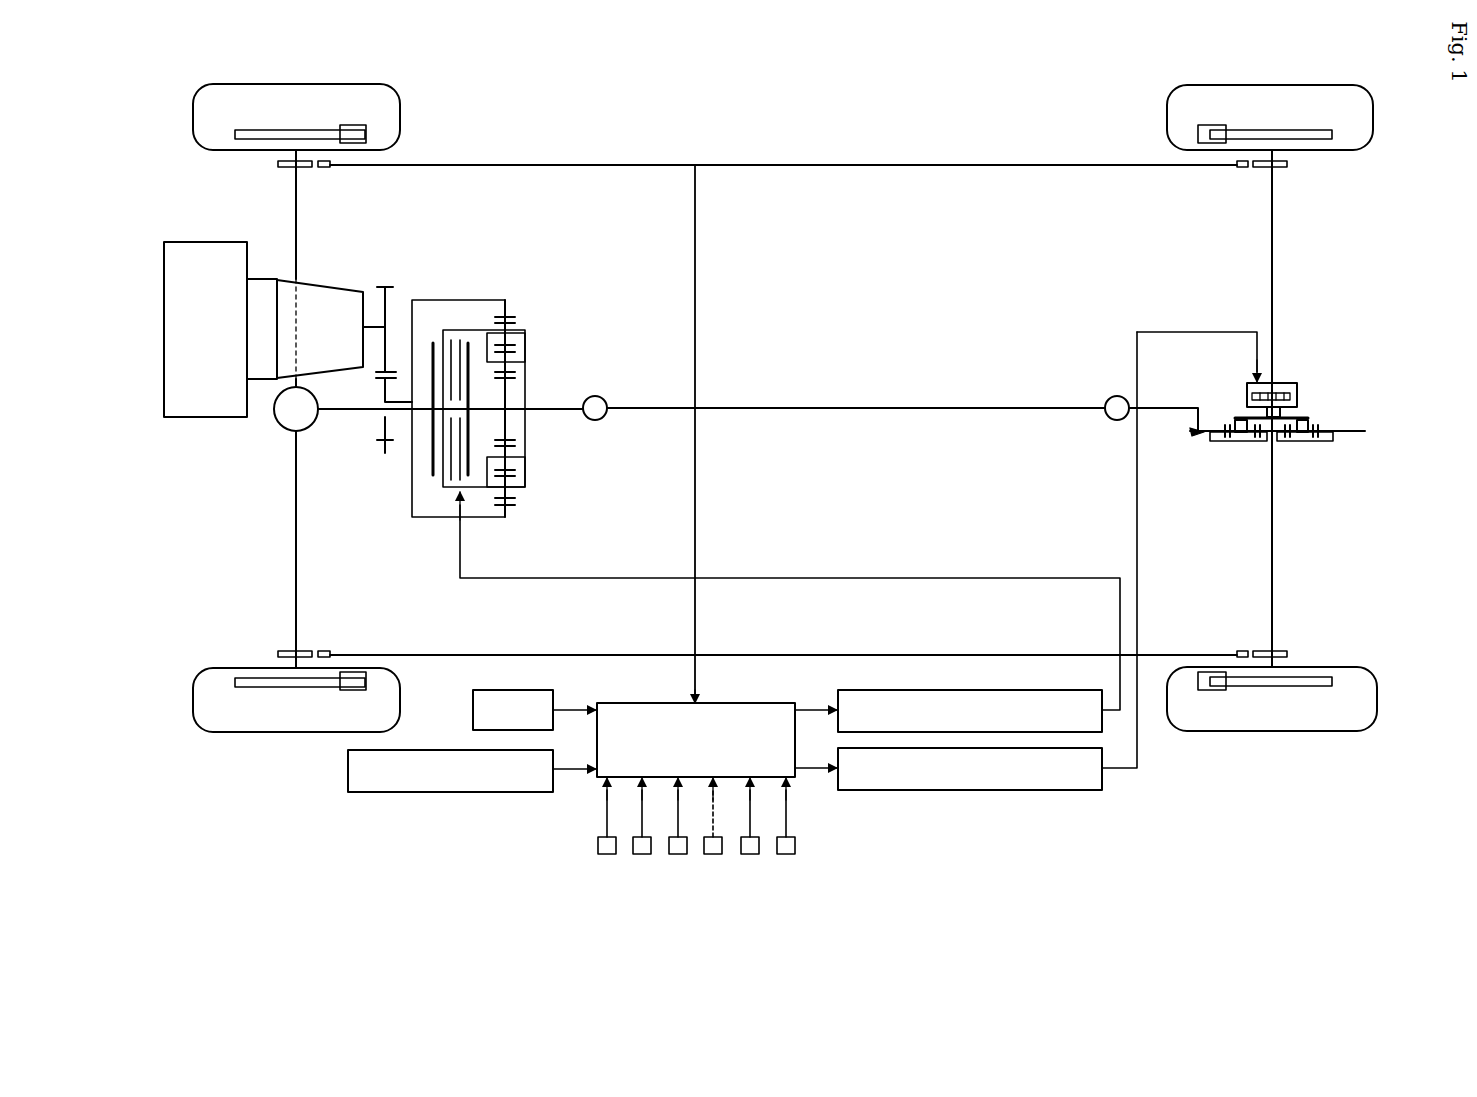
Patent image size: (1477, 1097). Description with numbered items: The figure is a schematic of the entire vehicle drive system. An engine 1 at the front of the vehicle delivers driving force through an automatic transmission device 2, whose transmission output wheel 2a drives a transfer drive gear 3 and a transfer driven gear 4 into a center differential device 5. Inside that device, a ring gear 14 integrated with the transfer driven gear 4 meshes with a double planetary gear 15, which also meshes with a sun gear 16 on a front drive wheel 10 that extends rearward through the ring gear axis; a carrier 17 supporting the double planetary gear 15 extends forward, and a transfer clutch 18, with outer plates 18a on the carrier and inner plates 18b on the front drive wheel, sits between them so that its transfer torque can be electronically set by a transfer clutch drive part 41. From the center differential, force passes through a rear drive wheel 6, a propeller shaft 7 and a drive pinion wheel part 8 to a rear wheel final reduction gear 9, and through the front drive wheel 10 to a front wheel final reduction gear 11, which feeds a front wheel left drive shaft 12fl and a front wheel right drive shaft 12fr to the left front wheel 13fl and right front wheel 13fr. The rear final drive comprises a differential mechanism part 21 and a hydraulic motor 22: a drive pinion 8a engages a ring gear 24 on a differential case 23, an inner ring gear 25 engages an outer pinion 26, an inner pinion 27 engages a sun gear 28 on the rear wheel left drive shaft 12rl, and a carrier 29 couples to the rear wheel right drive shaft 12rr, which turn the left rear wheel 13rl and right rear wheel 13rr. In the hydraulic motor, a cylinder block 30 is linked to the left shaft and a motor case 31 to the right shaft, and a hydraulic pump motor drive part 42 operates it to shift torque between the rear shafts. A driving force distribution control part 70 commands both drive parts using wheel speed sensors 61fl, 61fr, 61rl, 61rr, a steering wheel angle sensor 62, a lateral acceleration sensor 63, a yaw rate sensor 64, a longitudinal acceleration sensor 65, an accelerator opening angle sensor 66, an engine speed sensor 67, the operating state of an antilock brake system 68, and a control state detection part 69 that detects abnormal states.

The engine 1 is at (164, 316).
The automatic transmission device 2 is at (270, 278).
The transmission output wheel 2a is at (372, 326).
The transfer drive gear 3 is at (393, 287).
The transfer driven gear 4 is at (382, 454).
The center differential device 5 is at (524, 364).
The rear drive wheel 6 is at (584, 404).
The propeller shaft 7 is at (934, 403).
The drive pinion wheel part 8 is at (1161, 405).
The drive pinion 8a is at (1205, 408).
The rear wheel final reduction gear 9 is at (1288, 371).
The front drive wheel 10 is at (338, 412).
The front wheel final reduction gear 11 is at (283, 430).
The front wheel right drive shaft 12fr is at (296, 213).
The front wheel left drive shaft 12fl is at (296, 634).
The rear wheel right drive shaft 12rr is at (1273, 196).
The rear wheel left drive shaft 12rl is at (1273, 584).
The right front wheel 13fr is at (193, 118).
The left front wheel 13fl is at (193, 700).
The right rear wheel 13rr is at (1336, 85).
The left rear wheel 13rl is at (1336, 732).
The ring gear 14 is at (515, 318).
The double planetary gear 15 is at (515, 503).
The sun gear 16 is at (515, 380).
The carrier 17 is at (525, 346).
The transfer clutch 18 is at (463, 308).
The outer plate 18a is at (472, 302).
The inner plate 18b is at (453, 345).
The differential mechanism part 21 is at (1205, 455).
The hydraulic motor 22 is at (1274, 400).
The differential case 23 is at (1320, 441).
The ring gear 24 is at (1340, 431).
The ring gear 25 is at (1318, 428).
The outer pinion 26 is at (1227, 445).
The inner pinion 27 is at (1256, 443).
The sun gear 28 is at (1267, 458).
The carrier 29 is at (1304, 420).
The cylinder block 30 is at (1283, 387).
The motor case 31 is at (1259, 336).
The transfer clutch drive part 41 is at (838, 698).
The hydraulic pump motor drive part 42 is at (1008, 792).
The wheel speed sensor 61fr is at (322, 168).
The wheel speed sensor 61fl is at (325, 651).
The wheel speed sensor 61rr is at (1243, 168).
The wheel speed sensor 61rl is at (1248, 651).
The steering wheel angle sensor 62 is at (604, 855).
The lateral acceleration sensor 63 is at (640, 855).
The yaw rate sensor 64 is at (676, 855).
The longitudinal acceleration sensor 65 is at (714, 855).
The accelerator opening angle sensor 66 is at (750, 855).
The engine speed sensor 67 is at (786, 855).
The antilock brake system 68 is at (473, 712).
The control state detection part 69 is at (348, 770).
The driving force distribution control part 70 is at (740, 703).